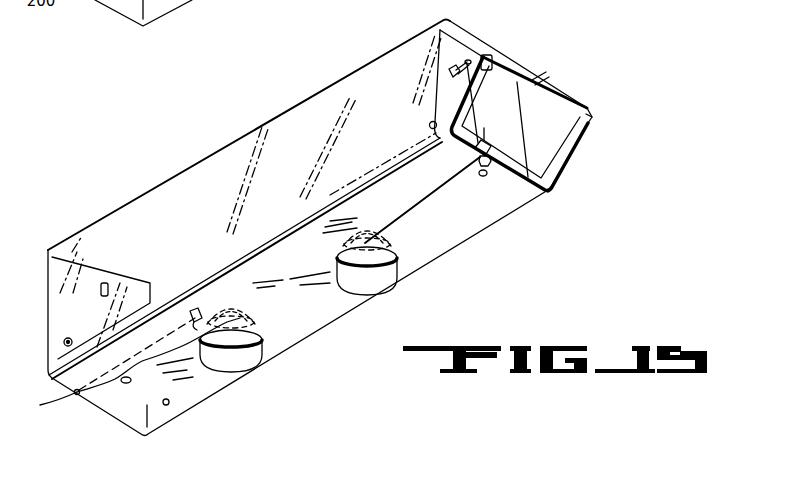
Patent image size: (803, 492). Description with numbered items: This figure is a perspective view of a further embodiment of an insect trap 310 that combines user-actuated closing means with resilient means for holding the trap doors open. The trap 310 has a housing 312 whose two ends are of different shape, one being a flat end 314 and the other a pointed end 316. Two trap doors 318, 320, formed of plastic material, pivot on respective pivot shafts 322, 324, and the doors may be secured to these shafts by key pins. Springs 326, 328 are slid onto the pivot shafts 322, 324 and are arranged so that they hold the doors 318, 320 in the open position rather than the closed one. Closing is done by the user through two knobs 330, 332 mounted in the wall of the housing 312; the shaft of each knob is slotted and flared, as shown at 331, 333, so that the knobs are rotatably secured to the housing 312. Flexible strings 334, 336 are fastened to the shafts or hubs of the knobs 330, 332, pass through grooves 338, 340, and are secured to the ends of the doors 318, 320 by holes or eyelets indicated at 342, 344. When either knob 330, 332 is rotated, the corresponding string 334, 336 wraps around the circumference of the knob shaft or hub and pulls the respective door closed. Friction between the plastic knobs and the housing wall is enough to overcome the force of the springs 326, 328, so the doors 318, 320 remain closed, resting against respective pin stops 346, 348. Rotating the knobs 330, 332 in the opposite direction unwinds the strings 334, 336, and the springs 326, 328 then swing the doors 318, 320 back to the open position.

The insect trap 310 is at (338, 79).
The housing 312 is at (285, 112).
The flat end 314 is at (57, 241).
The pointed end 316 is at (573, 88).
The trap door 318 is at (183, 383).
The trap door 320 is at (517, 82).
The pivot shaft 322 is at (69, 336).
The pivot shaft 324 is at (429, 125).
The spring 326 is at (119, 390).
The spring 328 is at (485, 178).
The knob 330 is at (250, 358).
The slotted and flared shaft 331 is at (250, 315).
The knob 332 is at (378, 283).
The slotted and flared shaft 333 is at (343, 247).
The flexible string 334 is at (97, 385).
The flexible string 336 is at (409, 212).
The groove 338 is at (105, 366).
The groove 340 is at (483, 148).
The hole or eyelet 342 is at (200, 309).
The hole or eyelet 344 is at (461, 50).
The pin stop 346 is at (108, 283).
The pin stop 348 is at (487, 55).